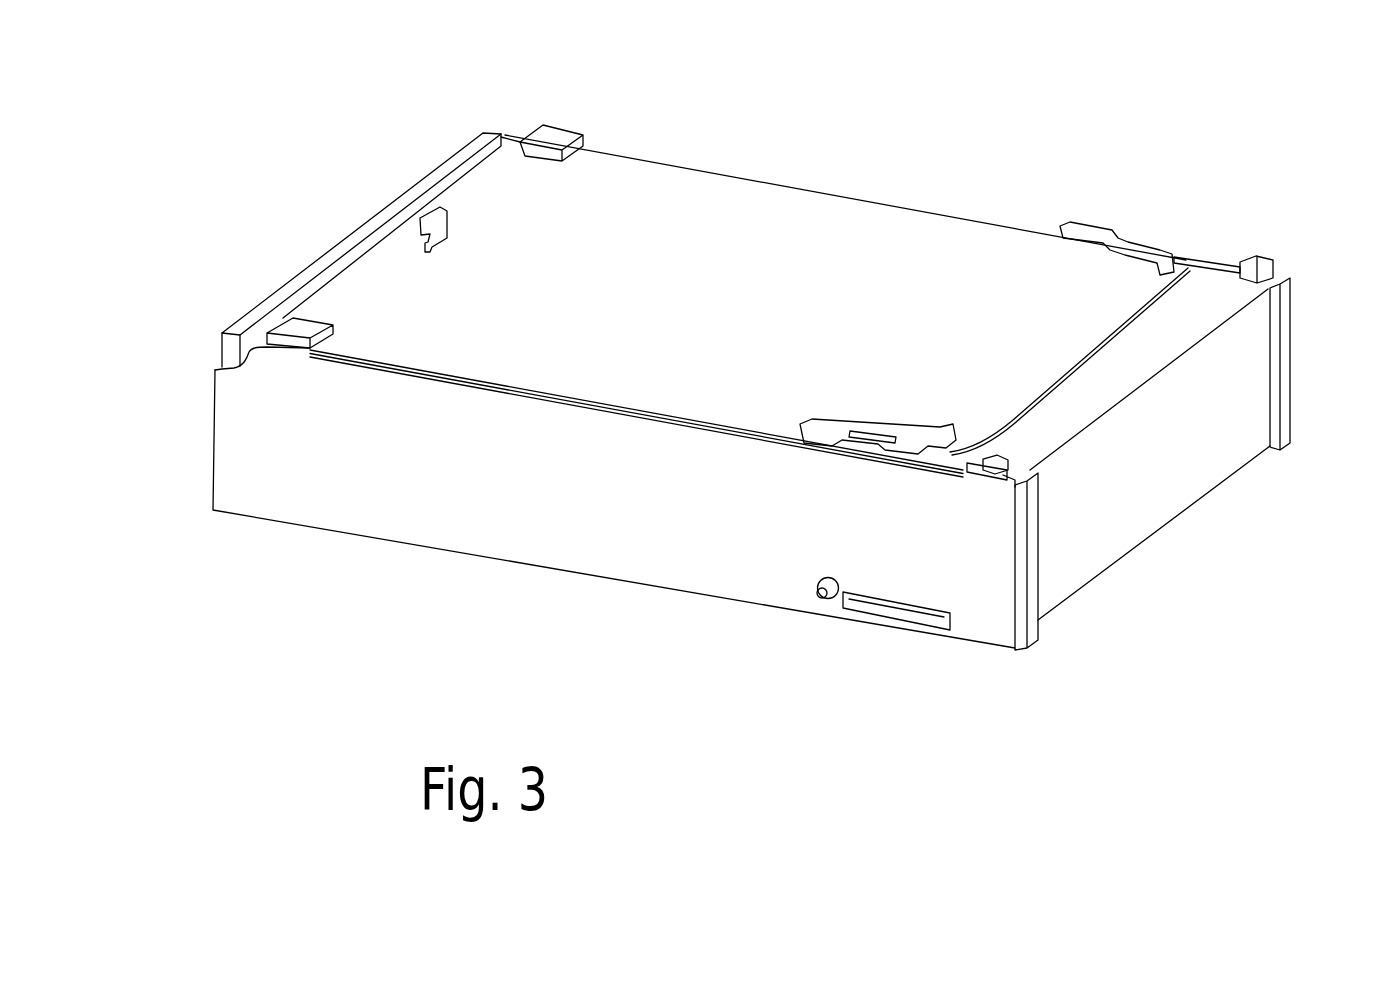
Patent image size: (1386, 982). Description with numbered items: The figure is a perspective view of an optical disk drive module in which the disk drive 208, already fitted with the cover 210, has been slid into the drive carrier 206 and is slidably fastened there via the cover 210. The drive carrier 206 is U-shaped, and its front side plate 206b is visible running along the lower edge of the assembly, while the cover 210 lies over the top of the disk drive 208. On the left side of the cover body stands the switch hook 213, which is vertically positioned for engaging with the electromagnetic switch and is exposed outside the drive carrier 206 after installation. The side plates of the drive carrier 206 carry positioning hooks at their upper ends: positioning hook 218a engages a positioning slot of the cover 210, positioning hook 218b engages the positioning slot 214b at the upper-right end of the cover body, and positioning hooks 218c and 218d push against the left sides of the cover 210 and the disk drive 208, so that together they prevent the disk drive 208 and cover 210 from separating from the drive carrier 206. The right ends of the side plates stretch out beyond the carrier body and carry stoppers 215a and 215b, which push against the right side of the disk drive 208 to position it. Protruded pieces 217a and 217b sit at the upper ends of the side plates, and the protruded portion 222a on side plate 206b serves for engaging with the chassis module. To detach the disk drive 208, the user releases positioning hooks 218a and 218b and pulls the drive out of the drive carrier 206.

The drive carrier 206 is at (671, 468).
The side plate 206b is at (383, 517).
The disk drive 208 is at (355, 217).
The cover 210 is at (620, 208).
The switch hook 213 is at (437, 213).
The positioning slot 214b is at (1200, 258).
The stopper 215a is at (1030, 513).
The stopper 215b is at (1290, 303).
The protruded piece 217a is at (985, 465).
The protruded piece 217b is at (1257, 265).
The positioning hook 218a is at (862, 432).
The positioning hook 218b is at (1137, 243).
The positioning hook 218c is at (297, 322).
The positioning hook 218d is at (556, 135).
The protruded portion 222a is at (827, 593).